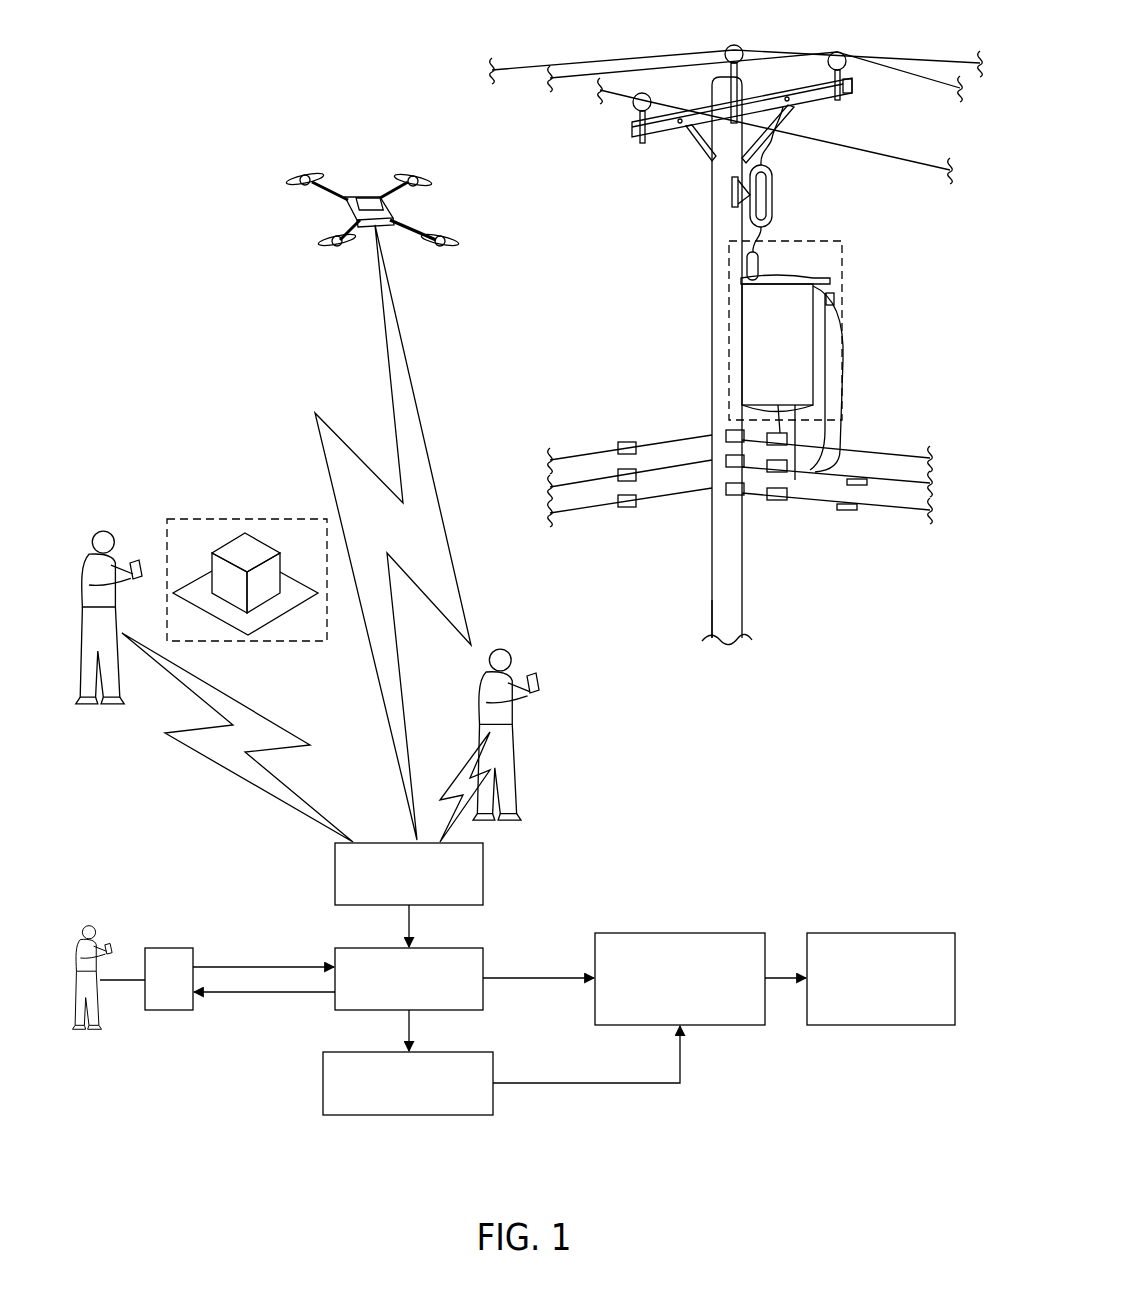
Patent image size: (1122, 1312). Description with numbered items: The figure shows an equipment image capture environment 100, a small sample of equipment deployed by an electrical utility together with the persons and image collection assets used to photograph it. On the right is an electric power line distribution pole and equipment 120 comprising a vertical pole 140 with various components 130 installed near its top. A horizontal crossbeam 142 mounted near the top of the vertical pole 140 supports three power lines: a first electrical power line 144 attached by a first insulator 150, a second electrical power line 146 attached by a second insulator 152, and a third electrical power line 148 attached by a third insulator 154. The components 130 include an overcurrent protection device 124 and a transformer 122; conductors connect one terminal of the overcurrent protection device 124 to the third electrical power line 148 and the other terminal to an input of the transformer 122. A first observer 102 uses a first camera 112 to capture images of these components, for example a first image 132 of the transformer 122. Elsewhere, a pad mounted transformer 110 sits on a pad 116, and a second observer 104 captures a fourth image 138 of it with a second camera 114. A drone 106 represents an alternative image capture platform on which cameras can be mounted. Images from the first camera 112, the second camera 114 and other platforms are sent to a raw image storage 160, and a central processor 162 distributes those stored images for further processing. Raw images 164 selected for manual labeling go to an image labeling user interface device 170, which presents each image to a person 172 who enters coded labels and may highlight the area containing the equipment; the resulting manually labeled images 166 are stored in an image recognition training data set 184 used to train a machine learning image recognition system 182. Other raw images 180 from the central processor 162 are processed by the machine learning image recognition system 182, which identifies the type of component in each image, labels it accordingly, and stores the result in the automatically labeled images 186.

The equipment image capture environment 100 is at (147, 160).
The first observer 102 is at (552, 698).
The second observer 104 is at (93, 712).
The drone 106 is at (361, 195).
The pad mounted transformer 110 is at (246, 547).
The first camera 112 is at (540, 678).
The second camera 114 is at (138, 560).
The pad 116 is at (293, 592).
The electric power line distribution pole and equipment 120 is at (760, 604).
The transformer 122 is at (813, 340).
The overcurrent protection device 124 is at (773, 196).
The components 130 is at (690, 328).
The first image 132 is at (842, 262).
The fourth image 138 is at (247, 519).
The vertical pole 140 is at (742, 580).
The horizontal crossbeam 142 is at (810, 100).
The first electrical power line 144 is at (545, 65).
The second electrical power line 146 is at (550, 82).
The third electrical power line 148 is at (612, 100).
The first insulator 150 is at (645, 93).
The second insulator 152 is at (734, 45).
The third insulator 154 is at (837, 52).
The raw image storage 160 is at (484, 874).
The central processor 162 is at (483, 997).
The raw images 164 is at (236, 966).
The manually labeled images 166 is at (253, 994).
The image labeling user interface device 170 is at (170, 948).
The person 172 is at (85, 918).
The raw images 180 is at (533, 976).
The machine learning image recognition system 182 is at (679, 932).
The image recognition training data set 184 is at (408, 1116).
The automatically labeled images 186 is at (882, 932).